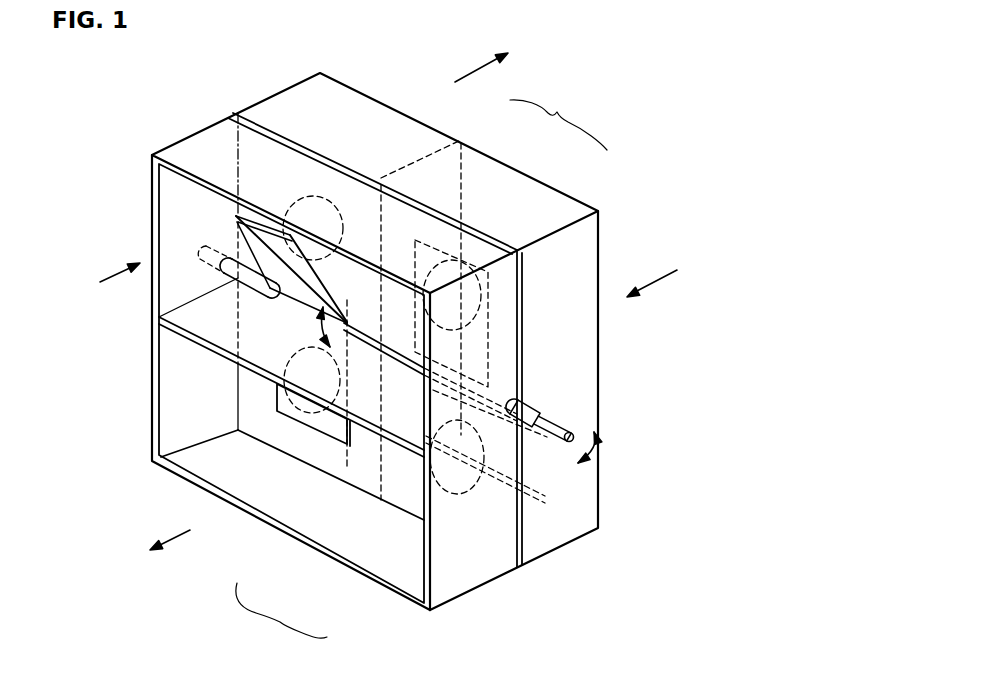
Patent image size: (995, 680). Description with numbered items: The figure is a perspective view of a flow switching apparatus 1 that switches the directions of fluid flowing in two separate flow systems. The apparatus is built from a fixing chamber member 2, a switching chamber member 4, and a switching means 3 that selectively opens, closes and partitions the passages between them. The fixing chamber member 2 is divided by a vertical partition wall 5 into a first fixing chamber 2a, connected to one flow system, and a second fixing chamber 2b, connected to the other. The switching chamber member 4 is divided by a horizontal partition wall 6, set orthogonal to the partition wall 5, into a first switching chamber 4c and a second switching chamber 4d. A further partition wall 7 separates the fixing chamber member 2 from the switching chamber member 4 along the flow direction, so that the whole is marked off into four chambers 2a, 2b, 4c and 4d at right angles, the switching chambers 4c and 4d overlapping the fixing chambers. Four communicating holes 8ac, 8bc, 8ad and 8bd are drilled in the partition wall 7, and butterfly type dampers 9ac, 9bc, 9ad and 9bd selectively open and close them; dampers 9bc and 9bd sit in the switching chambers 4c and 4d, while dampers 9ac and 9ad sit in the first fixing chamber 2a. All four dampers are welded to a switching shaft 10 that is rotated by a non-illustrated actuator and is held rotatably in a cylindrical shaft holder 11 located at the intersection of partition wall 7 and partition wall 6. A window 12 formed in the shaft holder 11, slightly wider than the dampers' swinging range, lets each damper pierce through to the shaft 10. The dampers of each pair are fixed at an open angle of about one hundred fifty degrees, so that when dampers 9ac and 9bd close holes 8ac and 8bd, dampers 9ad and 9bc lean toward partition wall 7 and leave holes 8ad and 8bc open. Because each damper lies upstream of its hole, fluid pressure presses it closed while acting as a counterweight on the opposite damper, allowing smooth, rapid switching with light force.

The flow switching apparatus 1 is at (722, 422).
The fixing chamber member 2 is at (558, 119).
The first fixing chamber 2a is at (500, 182).
The second fixing chamber 2b is at (392, 134).
The switching means 3 is at (222, 101).
The switching chamber member 4 is at (292, 381).
The first switching chamber 4c is at (378, 460).
The second switching chamber 4d is at (358, 525).
The vertical partition wall 5 is at (400, 183).
The horizontal partition wall 6 is at (227, 350).
The partition wall 7 is at (288, 140).
The communicating hole 8bc is at (290, 205).
The communicating hole 8bd is at (300, 407).
The communicating hole 8ac is at (465, 310).
The communicating hole 8ad is at (463, 477).
The butterfly type damper 9bc is at (257, 238).
The butterfly type damper 9bd is at (347, 418).
The butterfly type damper 9ac is at (490, 273).
The butterfly type damper 9ad is at (430, 492).
The switching shaft 10 is at (557, 421).
The cylindrical shaft holder 11 is at (528, 424).
The window 12 is at (266, 297).